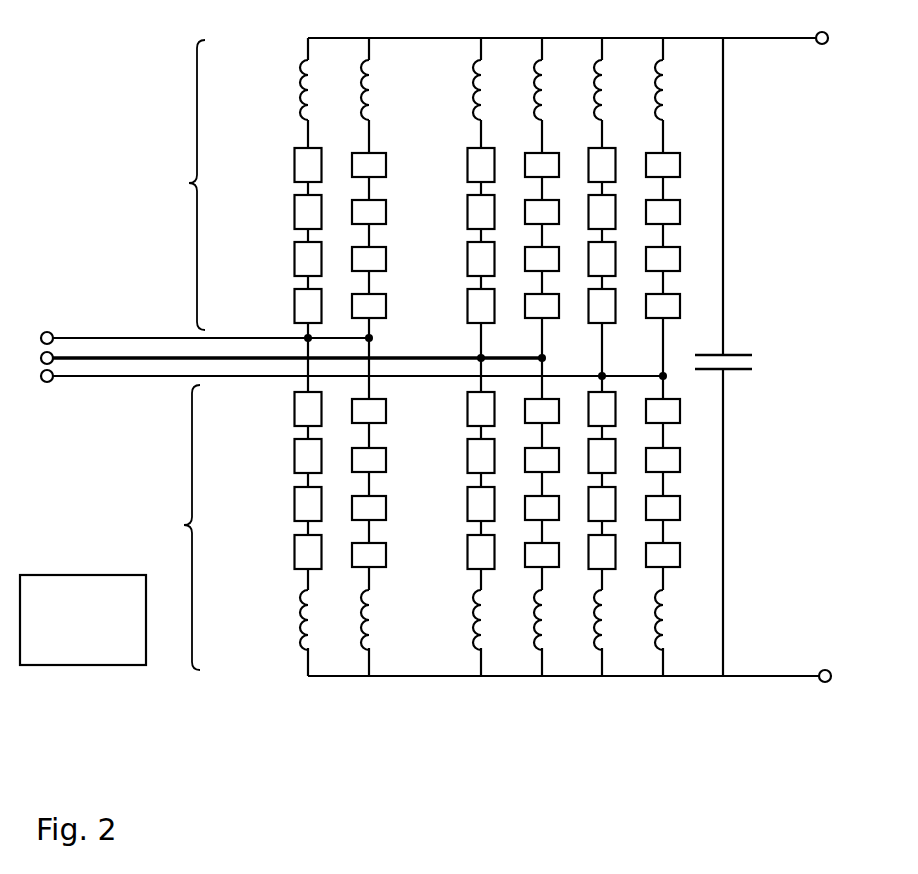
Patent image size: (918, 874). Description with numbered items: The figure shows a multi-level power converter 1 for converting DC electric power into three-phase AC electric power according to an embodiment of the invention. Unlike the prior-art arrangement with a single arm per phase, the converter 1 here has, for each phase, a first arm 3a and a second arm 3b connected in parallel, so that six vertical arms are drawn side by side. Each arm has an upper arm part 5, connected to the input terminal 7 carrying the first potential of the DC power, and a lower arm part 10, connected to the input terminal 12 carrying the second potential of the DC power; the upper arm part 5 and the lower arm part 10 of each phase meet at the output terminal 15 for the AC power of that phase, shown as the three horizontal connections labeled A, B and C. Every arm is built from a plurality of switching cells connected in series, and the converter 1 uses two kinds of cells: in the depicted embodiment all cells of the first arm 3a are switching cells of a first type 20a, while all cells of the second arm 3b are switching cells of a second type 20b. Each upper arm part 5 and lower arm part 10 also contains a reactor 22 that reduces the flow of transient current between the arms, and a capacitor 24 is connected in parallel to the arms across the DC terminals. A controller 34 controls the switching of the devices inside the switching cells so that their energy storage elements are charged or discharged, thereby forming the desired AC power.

The multi-level power converter 1 is at (155, 62).
The first arm 3a is at (605, 702).
The second arm 3b is at (666, 702).
The upper arm part 5 is at (182, 185).
The input terminal 7 is at (827, 50).
The lower arm part 10 is at (173, 527).
The input terminal 12 is at (831, 665).
The output terminal 15 is at (90, 312).
The switching cells of a first type 20a is at (313, 169).
The switching cells of a second type 20b is at (375, 157).
The reactor 22 is at (292, 82).
The capacitor 24 is at (740, 346).
The controller 34 is at (136, 583).